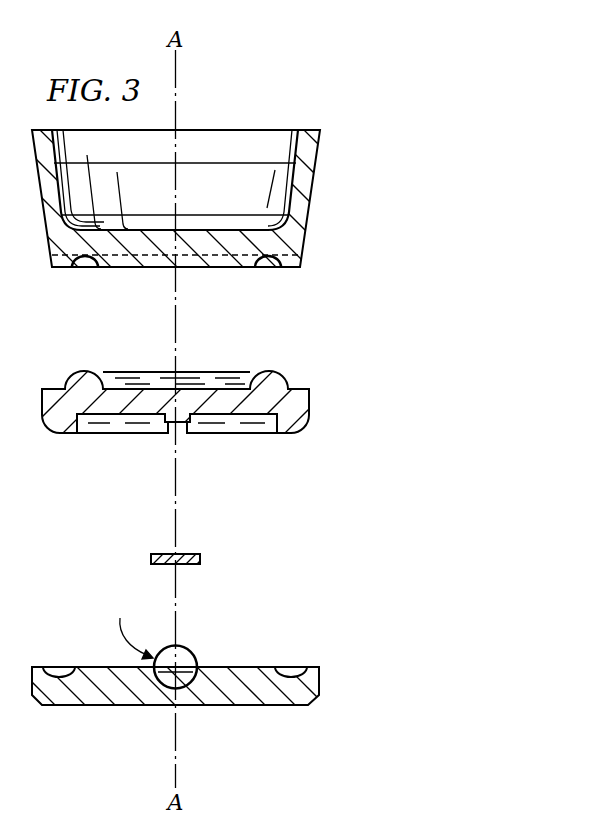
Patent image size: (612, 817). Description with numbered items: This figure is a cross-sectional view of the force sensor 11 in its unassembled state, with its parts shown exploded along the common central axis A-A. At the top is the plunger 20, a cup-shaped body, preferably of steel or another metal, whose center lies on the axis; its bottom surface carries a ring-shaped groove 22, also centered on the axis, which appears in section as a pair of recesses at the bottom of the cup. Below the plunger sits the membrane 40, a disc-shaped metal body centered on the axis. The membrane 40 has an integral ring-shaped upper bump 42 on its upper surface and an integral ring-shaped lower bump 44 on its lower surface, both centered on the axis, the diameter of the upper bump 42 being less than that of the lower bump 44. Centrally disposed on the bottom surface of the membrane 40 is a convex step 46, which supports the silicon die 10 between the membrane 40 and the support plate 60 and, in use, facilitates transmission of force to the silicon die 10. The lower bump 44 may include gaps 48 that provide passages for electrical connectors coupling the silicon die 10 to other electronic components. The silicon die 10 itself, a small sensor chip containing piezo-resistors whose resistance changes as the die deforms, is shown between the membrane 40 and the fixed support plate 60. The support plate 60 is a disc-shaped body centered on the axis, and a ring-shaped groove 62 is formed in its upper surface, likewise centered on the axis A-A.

The silicon die 10 is at (202, 562).
The force sensor 11 is at (253, 95).
The plunger 20 is at (308, 190).
The ring-shaped groove 22 is at (85, 269).
The membrane 40 is at (305, 405).
The upper bump 42 is at (216, 375).
The lower bump 44 is at (232, 428).
The step 46 is at (175, 419).
The gaps 48 is at (172, 437).
The support plate 60 is at (238, 671).
The ring-shaped groove 62 is at (58, 676).